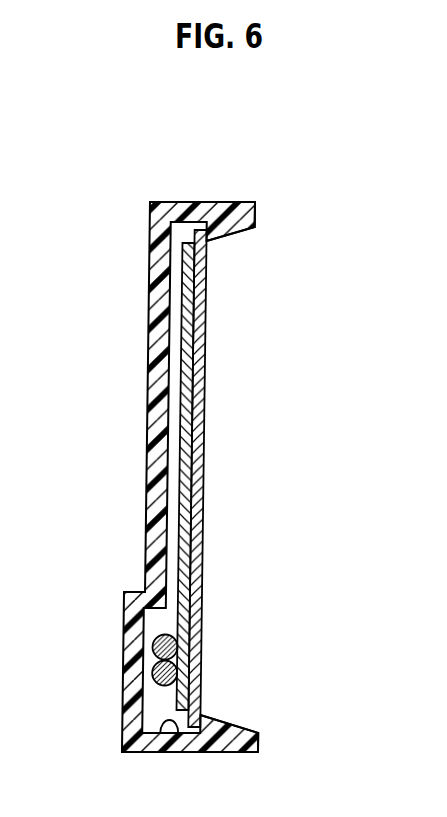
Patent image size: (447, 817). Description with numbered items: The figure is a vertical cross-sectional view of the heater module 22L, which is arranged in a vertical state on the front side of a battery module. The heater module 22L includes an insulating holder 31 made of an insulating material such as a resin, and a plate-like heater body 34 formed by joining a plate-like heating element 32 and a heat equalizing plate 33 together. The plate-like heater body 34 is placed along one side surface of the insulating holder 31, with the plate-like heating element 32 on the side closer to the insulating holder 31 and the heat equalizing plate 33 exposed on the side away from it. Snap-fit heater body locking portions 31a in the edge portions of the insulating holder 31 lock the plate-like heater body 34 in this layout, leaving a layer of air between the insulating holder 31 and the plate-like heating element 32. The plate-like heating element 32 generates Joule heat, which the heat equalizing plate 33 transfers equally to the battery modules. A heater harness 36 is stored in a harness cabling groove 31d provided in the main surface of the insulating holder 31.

The heater module 22L is at (265, 186).
The insulating holder 31 is at (149, 275).
The heater body locking portion 31a is at (225, 242).
The harness cabling groove 31d is at (177, 741).
The plate-like heating element 32 is at (203, 505).
The heat equalizing plate 33 is at (204, 478).
The plate-like heater body 34 is at (265, 478).
The heater harness 36 is at (152, 643).